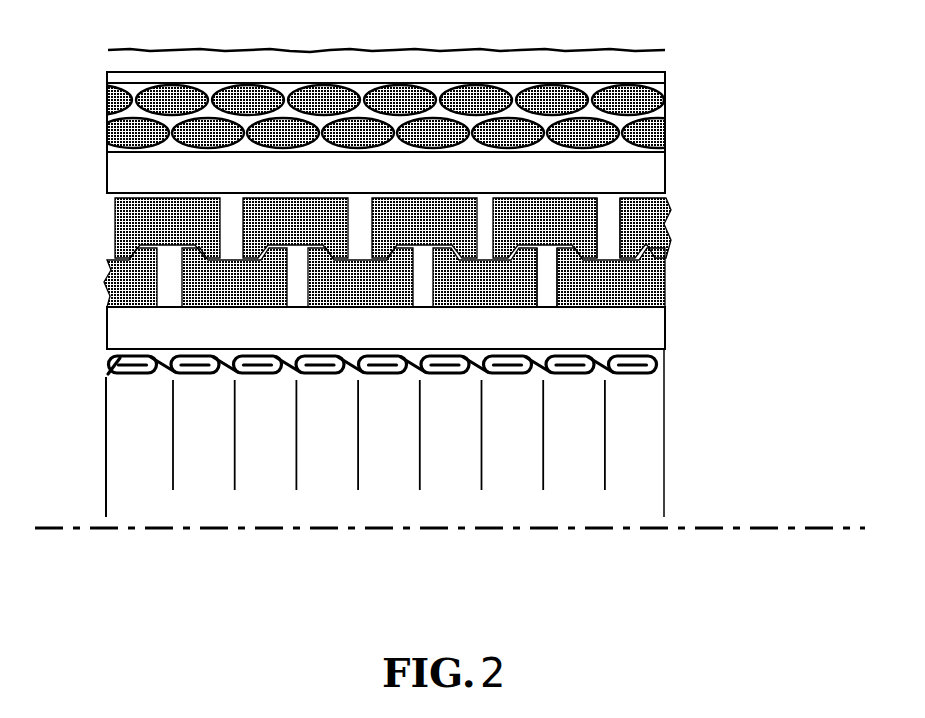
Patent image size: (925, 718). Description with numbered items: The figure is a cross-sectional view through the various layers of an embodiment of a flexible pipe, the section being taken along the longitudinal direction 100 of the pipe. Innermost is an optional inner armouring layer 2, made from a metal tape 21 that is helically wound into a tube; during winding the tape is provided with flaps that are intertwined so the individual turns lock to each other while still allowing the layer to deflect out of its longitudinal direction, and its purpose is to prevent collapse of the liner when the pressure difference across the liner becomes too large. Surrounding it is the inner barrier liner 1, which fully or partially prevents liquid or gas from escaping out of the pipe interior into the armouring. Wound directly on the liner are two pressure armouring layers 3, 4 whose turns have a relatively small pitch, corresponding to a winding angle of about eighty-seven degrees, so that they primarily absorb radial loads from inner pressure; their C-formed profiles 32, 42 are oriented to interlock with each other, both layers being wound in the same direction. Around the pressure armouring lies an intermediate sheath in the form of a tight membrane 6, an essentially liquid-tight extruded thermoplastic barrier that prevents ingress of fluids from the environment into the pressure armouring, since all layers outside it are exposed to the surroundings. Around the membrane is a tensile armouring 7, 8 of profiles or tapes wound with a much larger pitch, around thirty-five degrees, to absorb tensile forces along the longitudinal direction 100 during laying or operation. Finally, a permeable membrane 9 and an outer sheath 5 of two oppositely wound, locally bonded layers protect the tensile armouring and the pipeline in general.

The longitudinal direction 100 is at (202, 533).
The inner barrier liner 1 is at (637, 327).
The inner armouring layer 2 is at (628, 472).
The metal tape 21 is at (662, 362).
The pressure armouring layer 3 is at (657, 282).
The C-formed profile 32 is at (538, 277).
The pressure armouring layer 4 is at (655, 225).
The C-formed profile 42 is at (598, 214).
The tight membrane 6 is at (652, 175).
The tensile armouring layer 7 is at (655, 130).
The tensile armouring layer 8 is at (667, 100).
The permeable membrane 9 is at (672, 75).
The outer sheath 5 is at (668, 52).